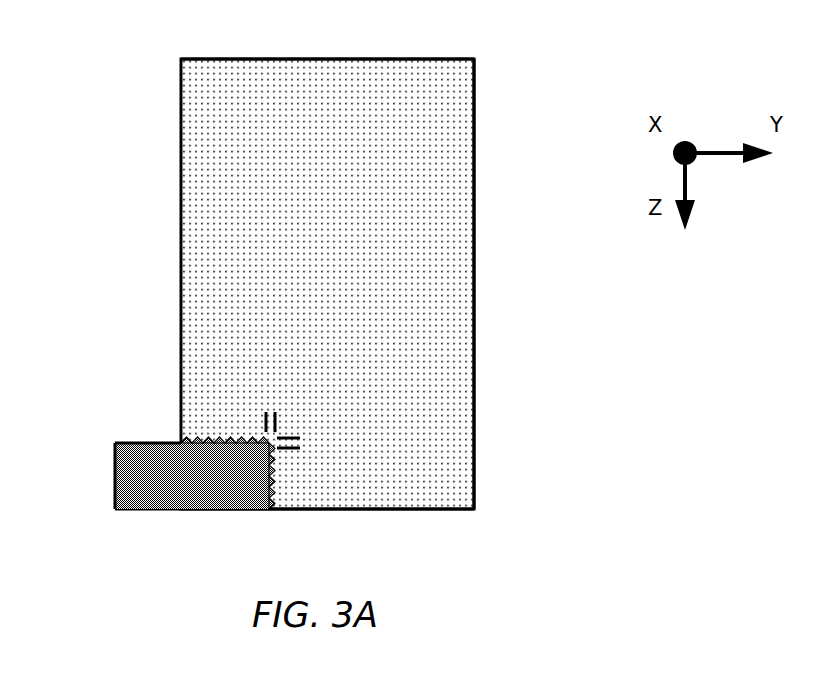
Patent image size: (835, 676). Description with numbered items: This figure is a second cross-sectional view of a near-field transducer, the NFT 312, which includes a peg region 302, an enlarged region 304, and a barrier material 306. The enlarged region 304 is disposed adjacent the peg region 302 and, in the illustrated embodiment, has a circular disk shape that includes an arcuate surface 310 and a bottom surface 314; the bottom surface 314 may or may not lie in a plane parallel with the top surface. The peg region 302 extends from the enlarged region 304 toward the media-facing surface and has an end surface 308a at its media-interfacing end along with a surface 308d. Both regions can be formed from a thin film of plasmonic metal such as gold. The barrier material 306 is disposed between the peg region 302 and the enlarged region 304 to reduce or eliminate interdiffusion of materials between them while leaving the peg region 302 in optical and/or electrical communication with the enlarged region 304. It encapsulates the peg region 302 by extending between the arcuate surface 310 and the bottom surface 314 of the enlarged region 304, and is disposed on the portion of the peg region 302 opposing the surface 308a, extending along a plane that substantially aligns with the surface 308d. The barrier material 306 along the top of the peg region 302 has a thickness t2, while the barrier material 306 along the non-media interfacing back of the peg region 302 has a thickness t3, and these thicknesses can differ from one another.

The peg region 302 is at (152, 517).
The enlarged region 304 is at (162, 89).
The barrier material 306 is at (228, 443).
The surface 308a is at (115, 476).
The surface 308d is at (152, 442).
The arcuate surface 310 is at (474, 297).
The NFT 312 is at (503, 120).
The bottom surface 314 is at (454, 510).
The thickness t2 is at (300, 443).
The thickness t3 is at (273, 412).